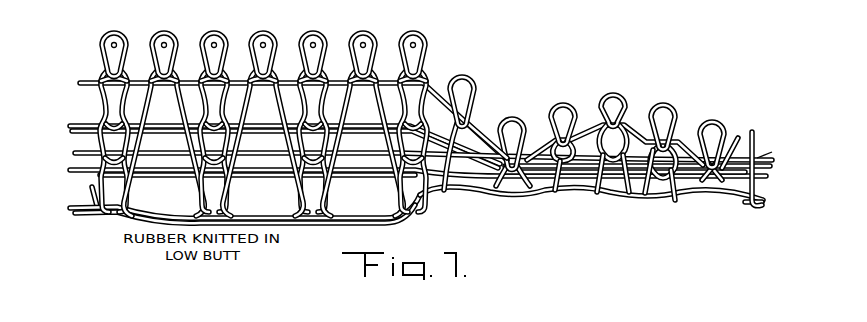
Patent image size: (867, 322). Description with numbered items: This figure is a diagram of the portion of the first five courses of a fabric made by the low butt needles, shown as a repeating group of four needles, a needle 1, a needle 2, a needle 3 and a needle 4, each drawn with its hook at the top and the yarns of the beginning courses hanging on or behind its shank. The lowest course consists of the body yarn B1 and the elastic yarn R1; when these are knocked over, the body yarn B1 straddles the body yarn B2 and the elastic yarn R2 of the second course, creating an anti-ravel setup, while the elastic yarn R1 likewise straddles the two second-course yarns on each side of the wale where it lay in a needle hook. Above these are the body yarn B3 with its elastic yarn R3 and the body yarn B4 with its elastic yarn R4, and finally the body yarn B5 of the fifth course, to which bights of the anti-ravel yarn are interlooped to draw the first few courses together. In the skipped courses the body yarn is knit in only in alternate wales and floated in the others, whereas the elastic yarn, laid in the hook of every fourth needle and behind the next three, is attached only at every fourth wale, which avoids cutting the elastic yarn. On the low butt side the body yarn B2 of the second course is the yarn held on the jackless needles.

The needle 1 is at (412, 111).
The needle 2 is at (349, 113).
The needle 3 is at (414, 111).
The needle 4 is at (449, 113).
The body yarn of the fifth course B5 is at (84, 82).
The body yarn of the fourth course B4 is at (84, 121).
The elastic yarn of the fourth course R4 is at (76, 126).
The body yarn of the third course B3 is at (78, 157).
The elastic yarn of the third course R3 is at (74, 171).
The elastic yarn of the second course R2 is at (90, 188).
The body yarn of the second course B2 is at (72, 208).
The body yarn of the first course B1 is at (76, 215).
The elastic yarn of the first course R1 is at (85, 216).